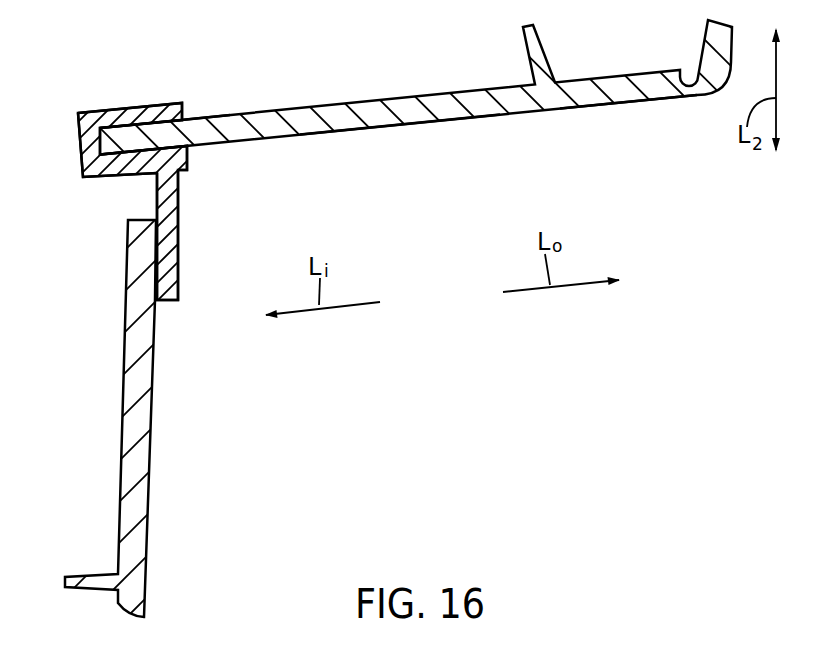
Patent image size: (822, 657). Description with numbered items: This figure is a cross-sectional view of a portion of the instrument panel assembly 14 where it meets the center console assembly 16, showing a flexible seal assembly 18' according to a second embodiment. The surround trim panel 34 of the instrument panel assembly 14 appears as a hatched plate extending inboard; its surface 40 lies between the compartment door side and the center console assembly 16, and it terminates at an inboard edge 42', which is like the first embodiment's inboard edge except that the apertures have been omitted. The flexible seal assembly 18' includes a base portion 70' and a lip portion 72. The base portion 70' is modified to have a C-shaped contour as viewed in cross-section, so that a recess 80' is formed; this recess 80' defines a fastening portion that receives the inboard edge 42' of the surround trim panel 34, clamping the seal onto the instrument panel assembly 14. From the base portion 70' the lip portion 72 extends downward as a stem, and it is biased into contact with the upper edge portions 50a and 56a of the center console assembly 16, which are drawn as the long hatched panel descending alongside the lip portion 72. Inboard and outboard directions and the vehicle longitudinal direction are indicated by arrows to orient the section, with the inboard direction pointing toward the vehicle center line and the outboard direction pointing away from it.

The instrument panel assembly 14 is at (327, 104).
The center console assembly 16 is at (292, 420).
The flexible seal assembly 18' is at (193, 194).
The surround trim panel 34 is at (597, 110).
The surface 40 is at (384, 128).
The inboard edge 42' is at (222, 97).
The upper edge portion 50a is at (292, 420).
The upper edge portion 56a is at (150, 458).
The base portion 70' is at (113, 169).
The lip portion 72 is at (178, 258).
The recess 80' is at (130, 99).